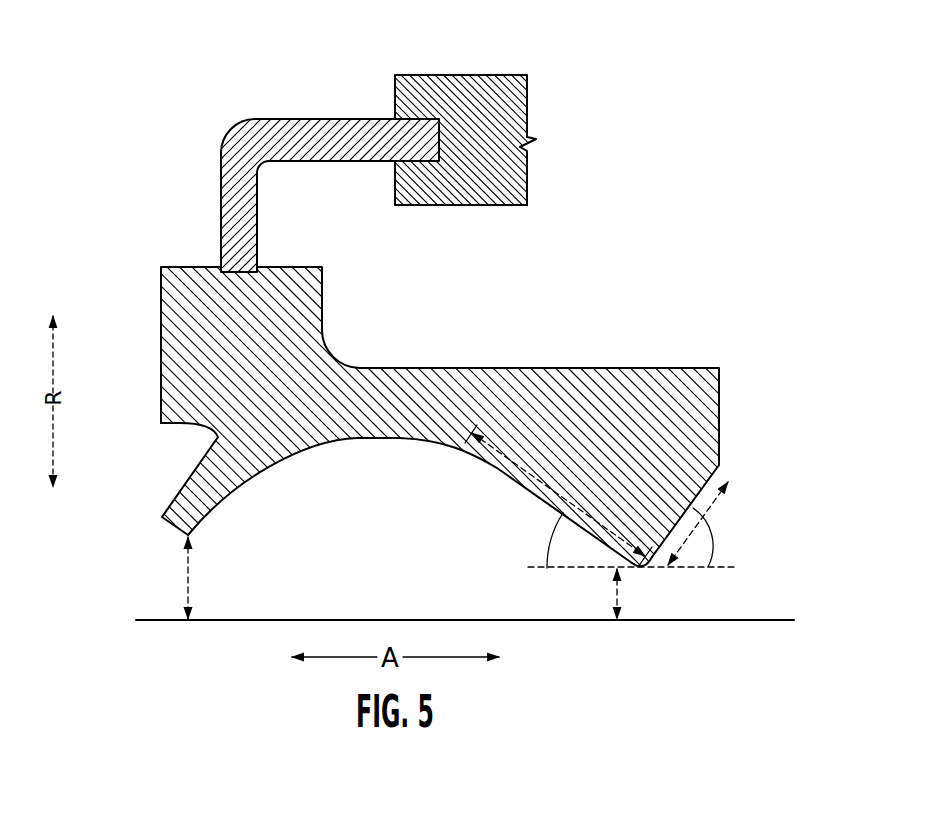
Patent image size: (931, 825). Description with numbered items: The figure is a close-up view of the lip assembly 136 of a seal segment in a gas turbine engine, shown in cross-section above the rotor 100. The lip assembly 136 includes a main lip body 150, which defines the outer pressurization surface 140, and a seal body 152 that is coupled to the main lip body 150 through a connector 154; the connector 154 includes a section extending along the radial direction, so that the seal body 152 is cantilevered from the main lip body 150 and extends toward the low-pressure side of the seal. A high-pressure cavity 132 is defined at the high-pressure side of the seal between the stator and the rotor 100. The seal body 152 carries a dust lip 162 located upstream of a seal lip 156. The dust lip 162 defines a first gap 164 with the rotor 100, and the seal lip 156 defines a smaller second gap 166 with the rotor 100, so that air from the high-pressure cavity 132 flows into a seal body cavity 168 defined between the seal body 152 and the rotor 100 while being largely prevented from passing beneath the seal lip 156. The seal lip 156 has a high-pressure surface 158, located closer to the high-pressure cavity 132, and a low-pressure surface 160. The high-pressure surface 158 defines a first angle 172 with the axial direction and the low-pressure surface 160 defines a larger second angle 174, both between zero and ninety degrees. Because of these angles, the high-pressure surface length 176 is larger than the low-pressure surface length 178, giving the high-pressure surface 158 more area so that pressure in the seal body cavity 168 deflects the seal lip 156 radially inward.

The rotor 100 is at (758, 619).
The high-pressure cavity 132 is at (104, 410).
The lip assembly 136 is at (225, 74).
The outer pressurization surface 140 is at (409, 72).
The main lip body 150 is at (459, 206).
The seal body 152 is at (498, 369).
The connector 154 is at (253, 119).
The seal lip 156 is at (669, 573).
The high-pressure surface 158 is at (541, 499).
The low-pressure surface 160 is at (709, 478).
The dust lip 162 is at (166, 531).
The first gap 164 is at (189, 593).
The second gap 166 is at (615, 596).
The seal body cavity 168 is at (347, 526).
The first angle 172 is at (548, 546).
The second angle 174 is at (714, 520).
The high-pressure surface length 176 is at (537, 487).
The low-pressure surface length 178 is at (714, 497).